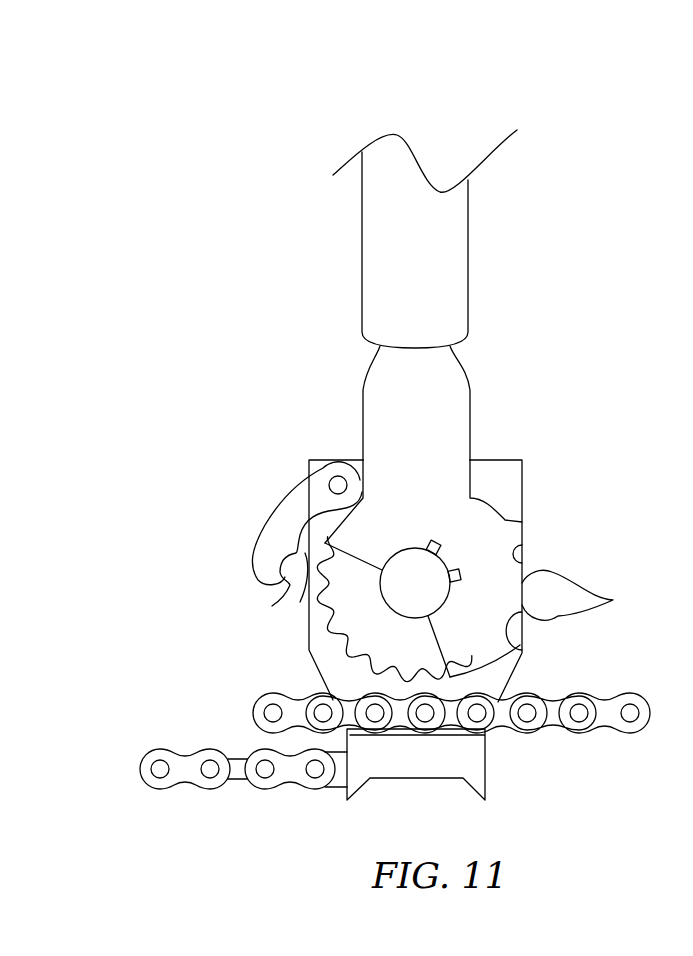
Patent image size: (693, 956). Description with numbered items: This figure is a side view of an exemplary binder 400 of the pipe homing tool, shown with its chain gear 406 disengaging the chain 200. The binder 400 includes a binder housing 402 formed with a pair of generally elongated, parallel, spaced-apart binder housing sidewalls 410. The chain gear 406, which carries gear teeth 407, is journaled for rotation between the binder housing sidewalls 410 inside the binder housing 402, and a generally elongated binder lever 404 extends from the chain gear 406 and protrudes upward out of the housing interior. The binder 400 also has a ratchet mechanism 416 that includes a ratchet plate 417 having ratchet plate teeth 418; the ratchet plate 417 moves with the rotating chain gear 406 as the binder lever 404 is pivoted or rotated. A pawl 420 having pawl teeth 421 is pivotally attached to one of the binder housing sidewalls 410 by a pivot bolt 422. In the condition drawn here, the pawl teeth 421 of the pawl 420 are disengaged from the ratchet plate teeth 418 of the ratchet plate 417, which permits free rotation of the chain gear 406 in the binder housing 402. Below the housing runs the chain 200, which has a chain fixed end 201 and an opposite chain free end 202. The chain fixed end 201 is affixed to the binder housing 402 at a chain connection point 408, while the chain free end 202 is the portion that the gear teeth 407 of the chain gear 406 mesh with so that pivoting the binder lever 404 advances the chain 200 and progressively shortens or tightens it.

The binder 400 is at (297, 322).
The binder lever 404 is at (468, 263).
The binder housing sidewalls 410 is at (492, 465).
The binder housing 402 is at (530, 495).
The chain gear 406 is at (503, 567).
The ratchet mechanism 416 is at (292, 452).
The pawl 420 is at (285, 508).
The pivot bolt 422 is at (338, 476).
The pawl teeth 421 is at (300, 600).
The ratchet plate teeth 418 is at (320, 650).
The ratchet plate 417 is at (408, 645).
The gear teeth 407 is at (586, 595).
The chain 200 is at (248, 692).
The chain free end 202 is at (258, 718).
The chain fixed end 201 is at (330, 783).
The chain connection point 408 is at (355, 775).